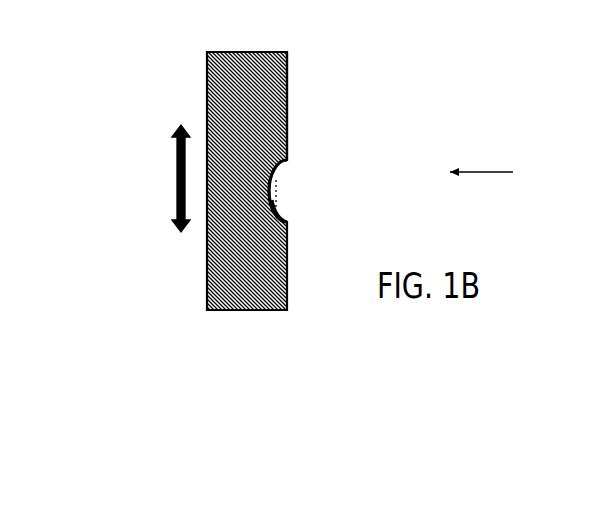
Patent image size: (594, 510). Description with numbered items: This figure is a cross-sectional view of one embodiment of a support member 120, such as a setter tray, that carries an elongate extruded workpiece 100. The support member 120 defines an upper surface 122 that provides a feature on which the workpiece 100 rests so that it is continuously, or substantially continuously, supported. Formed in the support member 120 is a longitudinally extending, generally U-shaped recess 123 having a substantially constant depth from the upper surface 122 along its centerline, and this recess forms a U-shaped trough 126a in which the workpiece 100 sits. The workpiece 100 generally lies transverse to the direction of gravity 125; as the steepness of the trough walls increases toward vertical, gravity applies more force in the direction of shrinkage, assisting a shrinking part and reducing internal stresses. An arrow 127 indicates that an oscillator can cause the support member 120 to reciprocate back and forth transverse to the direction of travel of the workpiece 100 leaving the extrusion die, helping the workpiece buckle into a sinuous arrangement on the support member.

The workpiece 100 is at (288, 183).
The support member 120 is at (312, 100).
The upper surface 122 is at (288, 70).
The recess 123 is at (300, 160).
The direction of gravity 125 is at (480, 172).
The U-shaped trough 126a is at (290, 222).
The arrow 127 is at (172, 155).